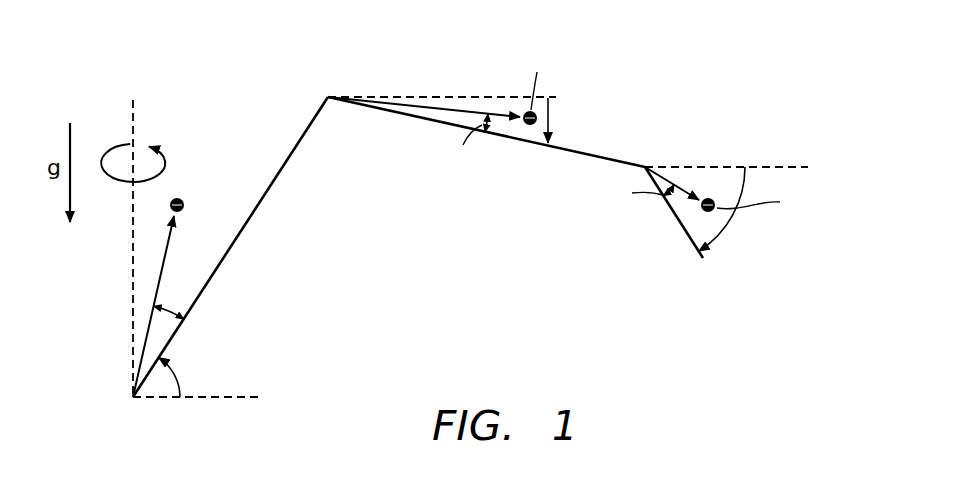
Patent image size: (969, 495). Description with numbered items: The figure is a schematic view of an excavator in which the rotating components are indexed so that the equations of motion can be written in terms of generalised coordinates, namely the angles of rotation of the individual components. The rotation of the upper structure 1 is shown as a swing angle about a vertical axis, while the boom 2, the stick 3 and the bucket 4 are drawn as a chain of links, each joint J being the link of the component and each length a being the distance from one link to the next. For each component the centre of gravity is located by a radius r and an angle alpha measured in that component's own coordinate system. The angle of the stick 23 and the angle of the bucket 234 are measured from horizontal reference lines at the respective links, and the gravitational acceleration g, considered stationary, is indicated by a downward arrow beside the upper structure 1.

The upper structure 1 is at (142, 248).
The boom 2 is at (216, 252).
The stick 3 is at (479, 95).
The stick angle (psi 23) 23 is at (567, 120).
The bucket 4 is at (739, 197).
The bucket angle (psi 234) 234 is at (733, 209).